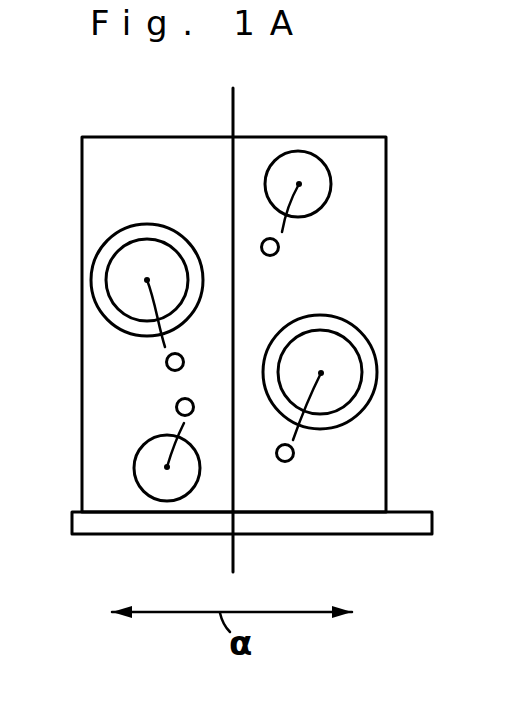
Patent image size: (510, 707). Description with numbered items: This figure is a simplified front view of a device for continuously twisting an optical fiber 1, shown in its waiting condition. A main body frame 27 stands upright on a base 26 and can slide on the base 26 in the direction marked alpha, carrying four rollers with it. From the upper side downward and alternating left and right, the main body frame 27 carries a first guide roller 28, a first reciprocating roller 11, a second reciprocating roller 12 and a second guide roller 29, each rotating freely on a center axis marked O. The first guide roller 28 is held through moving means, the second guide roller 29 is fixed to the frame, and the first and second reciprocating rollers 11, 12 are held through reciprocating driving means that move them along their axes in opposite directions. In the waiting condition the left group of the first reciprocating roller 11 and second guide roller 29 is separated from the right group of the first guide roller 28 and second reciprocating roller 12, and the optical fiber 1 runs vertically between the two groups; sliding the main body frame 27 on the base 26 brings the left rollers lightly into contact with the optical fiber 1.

The optical fiber 1 is at (237, 107).
The first reciprocating roller 11 is at (127, 257).
The second reciprocating roller 12 is at (347, 383).
The base 26 is at (323, 522).
The main body frame 27 is at (100, 400).
The first guide roller 28 is at (320, 189).
The second guide roller 29 is at (152, 475).